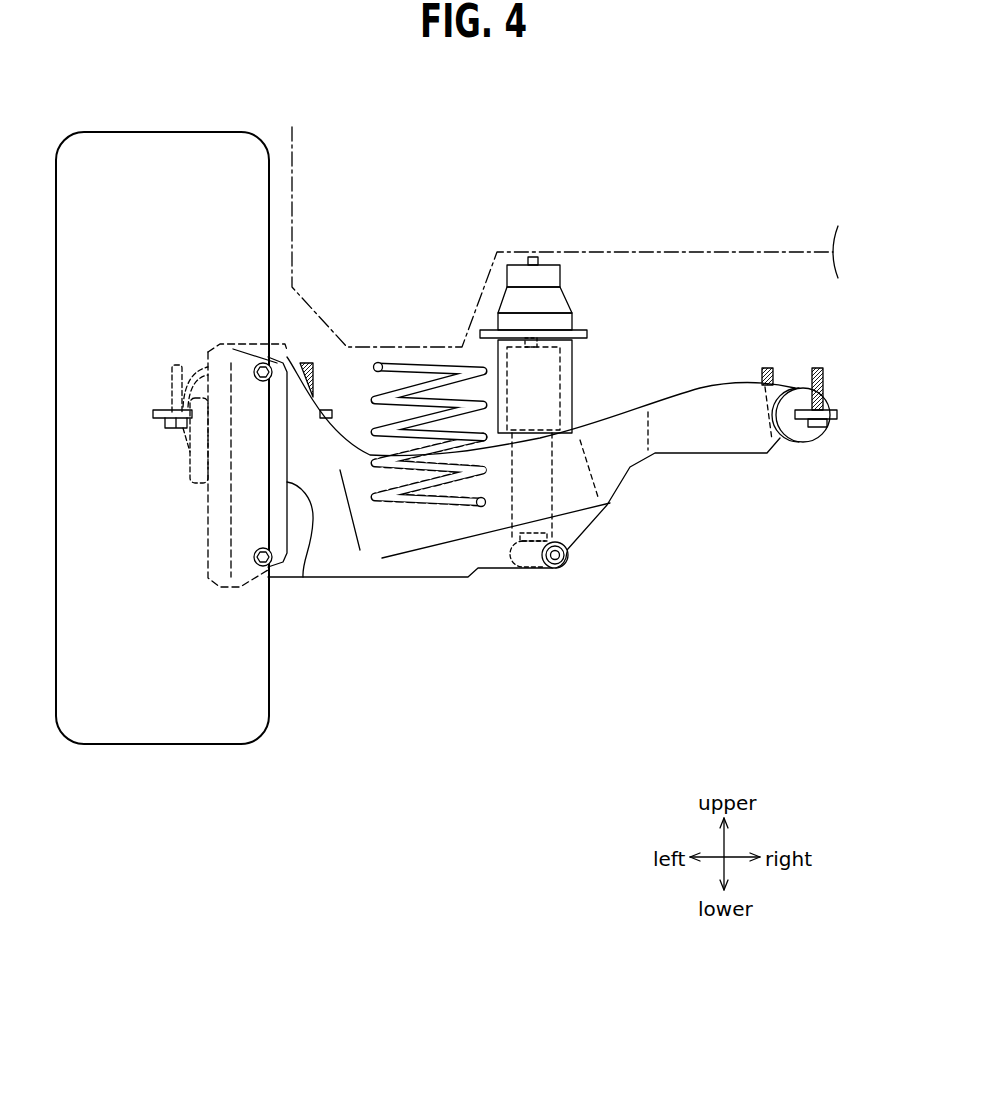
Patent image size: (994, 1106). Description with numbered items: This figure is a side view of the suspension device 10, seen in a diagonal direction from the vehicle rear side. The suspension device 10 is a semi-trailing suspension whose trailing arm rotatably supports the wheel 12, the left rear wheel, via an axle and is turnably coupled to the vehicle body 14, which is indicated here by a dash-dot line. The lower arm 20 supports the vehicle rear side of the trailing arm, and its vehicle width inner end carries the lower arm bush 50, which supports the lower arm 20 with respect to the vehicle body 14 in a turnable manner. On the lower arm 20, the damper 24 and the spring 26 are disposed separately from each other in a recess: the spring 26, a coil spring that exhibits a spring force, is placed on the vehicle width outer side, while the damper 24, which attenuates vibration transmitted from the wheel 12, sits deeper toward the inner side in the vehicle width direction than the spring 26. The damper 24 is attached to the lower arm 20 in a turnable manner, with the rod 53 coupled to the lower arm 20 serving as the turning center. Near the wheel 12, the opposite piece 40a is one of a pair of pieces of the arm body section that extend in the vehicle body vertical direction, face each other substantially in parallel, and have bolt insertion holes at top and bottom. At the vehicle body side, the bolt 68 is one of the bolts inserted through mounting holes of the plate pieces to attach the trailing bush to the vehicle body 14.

The suspension device 10 is at (720, 162).
The wheel 12 is at (163, 131).
The vehicle body 14 is at (732, 253).
The lower arm 20 is at (577, 509).
The damper 24 is at (573, 379).
The spring 26 is at (395, 362).
The opposite piece 40a is at (303, 577).
The lower arm bush 50 is at (800, 442).
The rod 53 is at (570, 553).
The bolt 68 is at (825, 373).